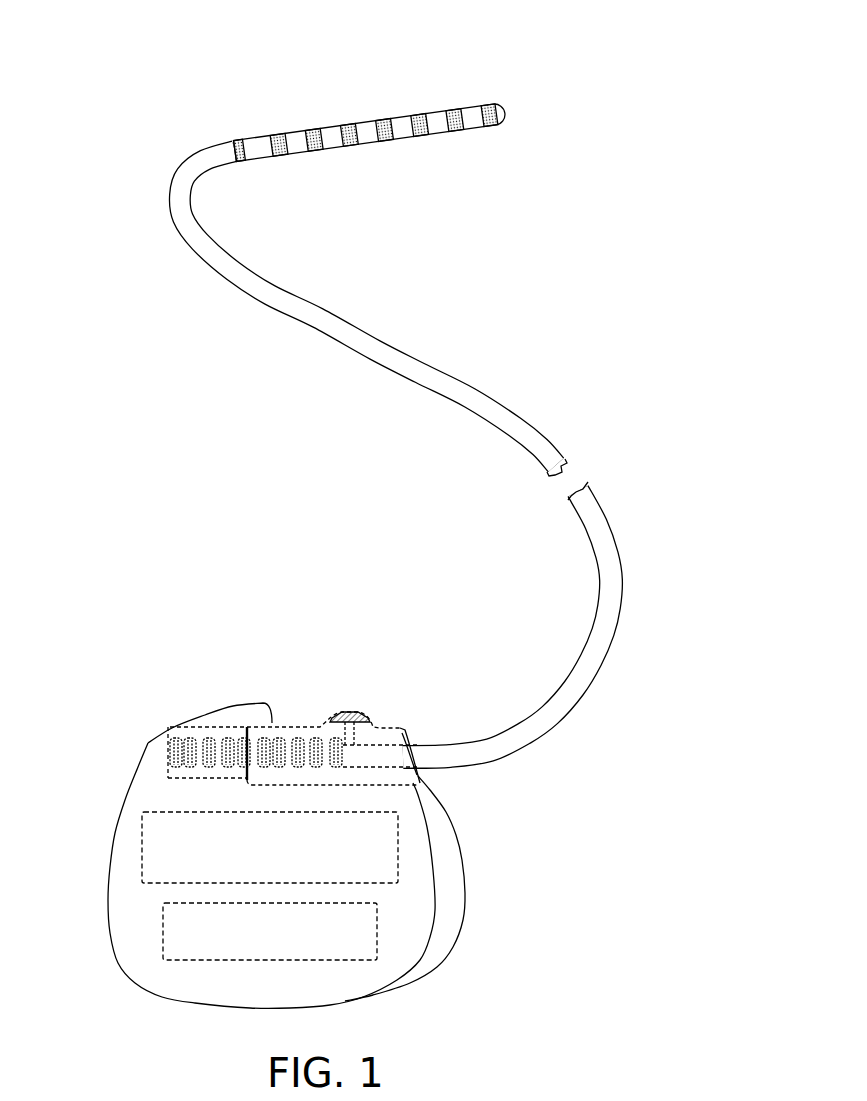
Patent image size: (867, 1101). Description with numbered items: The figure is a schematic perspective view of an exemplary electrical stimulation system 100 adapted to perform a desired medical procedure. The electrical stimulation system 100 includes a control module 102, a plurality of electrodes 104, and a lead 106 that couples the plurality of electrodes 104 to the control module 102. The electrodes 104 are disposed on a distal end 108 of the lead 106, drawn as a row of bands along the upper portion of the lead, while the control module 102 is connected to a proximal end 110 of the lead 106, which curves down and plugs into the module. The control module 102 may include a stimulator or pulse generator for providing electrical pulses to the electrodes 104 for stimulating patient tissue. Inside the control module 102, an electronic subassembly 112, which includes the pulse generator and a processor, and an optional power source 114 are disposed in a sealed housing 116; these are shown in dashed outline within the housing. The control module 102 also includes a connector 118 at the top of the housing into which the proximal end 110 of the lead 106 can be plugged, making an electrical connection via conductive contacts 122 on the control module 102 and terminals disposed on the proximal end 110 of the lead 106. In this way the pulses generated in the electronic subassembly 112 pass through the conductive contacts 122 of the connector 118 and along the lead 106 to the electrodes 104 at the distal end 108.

The electrical stimulation system 100 is at (645, 62).
The control module 102 is at (148, 743).
The electrodes 104 is at (368, 149).
The lead 106 is at (368, 335).
The distal end 108 is at (320, 145).
The proximal end 110 is at (417, 735).
The electronic subassembly 112 is at (163, 857).
The power source 114 is at (172, 928).
The sealed housing 116 is at (452, 890).
The connector 118 is at (378, 727).
The conductive contacts 122 is at (273, 742).